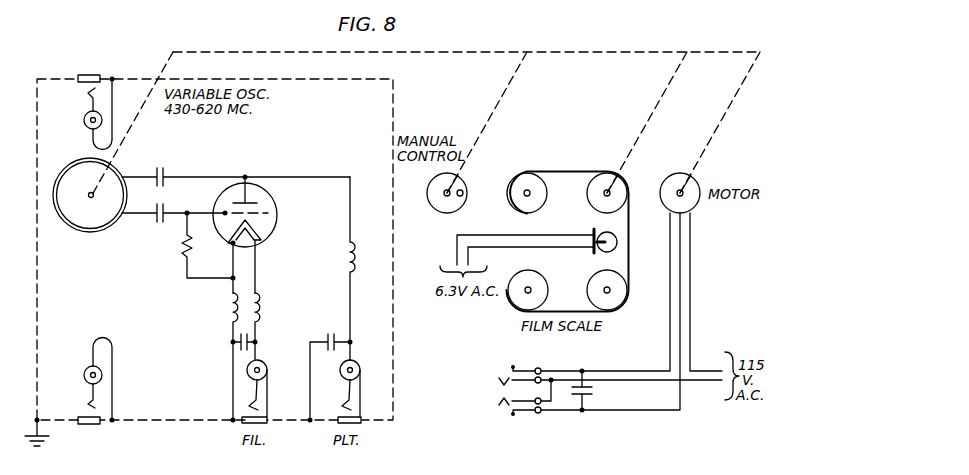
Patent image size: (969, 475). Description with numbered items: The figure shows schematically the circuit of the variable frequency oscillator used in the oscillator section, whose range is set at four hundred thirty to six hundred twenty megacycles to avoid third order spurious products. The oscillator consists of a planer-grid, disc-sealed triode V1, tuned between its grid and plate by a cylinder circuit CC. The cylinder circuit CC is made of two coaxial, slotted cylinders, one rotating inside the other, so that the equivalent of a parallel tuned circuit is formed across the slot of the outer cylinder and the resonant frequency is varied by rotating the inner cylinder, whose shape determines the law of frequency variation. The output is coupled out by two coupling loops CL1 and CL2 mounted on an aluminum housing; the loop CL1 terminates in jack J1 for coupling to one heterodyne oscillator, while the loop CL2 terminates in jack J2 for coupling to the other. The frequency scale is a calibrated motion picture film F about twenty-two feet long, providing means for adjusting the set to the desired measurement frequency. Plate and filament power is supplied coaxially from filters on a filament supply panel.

The jack J1 is at (83, 87).
The coupling loop CL1 is at (92, 140).
The cylinder circuit CC is at (113, 235).
The planer-grid, disc-sealed triode V1 is at (276, 216).
The coupling loop CL2 is at (113, 362).
The jack J2 is at (88, 403).
The calibrated motion picture film F is at (626, 242).